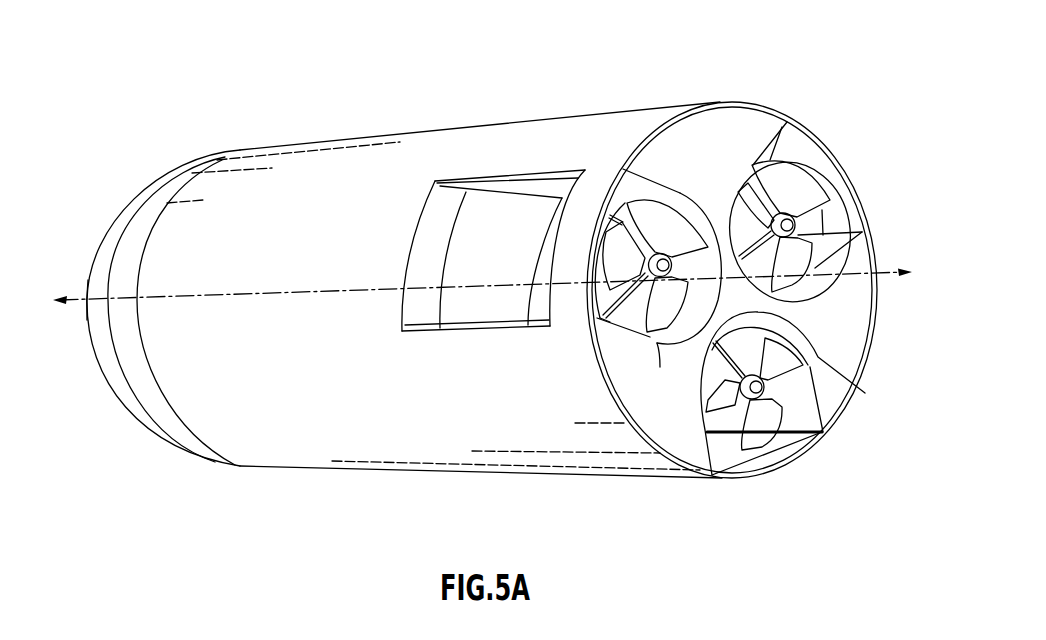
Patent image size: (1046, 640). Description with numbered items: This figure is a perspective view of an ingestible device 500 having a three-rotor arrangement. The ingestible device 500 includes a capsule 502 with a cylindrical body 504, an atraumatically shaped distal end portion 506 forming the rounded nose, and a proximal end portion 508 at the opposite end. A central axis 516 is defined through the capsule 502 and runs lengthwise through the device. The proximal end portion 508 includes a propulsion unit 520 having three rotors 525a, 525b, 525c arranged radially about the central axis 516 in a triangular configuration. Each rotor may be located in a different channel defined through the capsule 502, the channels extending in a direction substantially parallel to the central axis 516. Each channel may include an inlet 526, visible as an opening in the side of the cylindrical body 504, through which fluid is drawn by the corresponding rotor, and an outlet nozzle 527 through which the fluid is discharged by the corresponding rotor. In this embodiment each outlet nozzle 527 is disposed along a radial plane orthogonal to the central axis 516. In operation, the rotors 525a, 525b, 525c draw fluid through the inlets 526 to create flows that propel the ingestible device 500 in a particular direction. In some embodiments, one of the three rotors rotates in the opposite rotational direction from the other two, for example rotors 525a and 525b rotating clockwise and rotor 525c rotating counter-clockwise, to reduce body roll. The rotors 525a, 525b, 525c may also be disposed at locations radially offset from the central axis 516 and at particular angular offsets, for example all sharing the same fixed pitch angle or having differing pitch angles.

The ingestible device 500 is at (650, 33).
The capsule 502 is at (240, 478).
The cylindrical body 504 is at (558, 461).
The atraumatically shaped distal end portion 506 is at (220, 140).
The proximal end portion 508 is at (792, 70).
The central axis 516 is at (87, 298).
The propulsion unit 520 is at (880, 253).
The rotor 525a is at (645, 224).
The rotor 525b is at (787, 175).
The rotor 525c is at (767, 342).
The inlet 526 is at (493, 227).
The outlet nozzle 527 is at (627, 320).